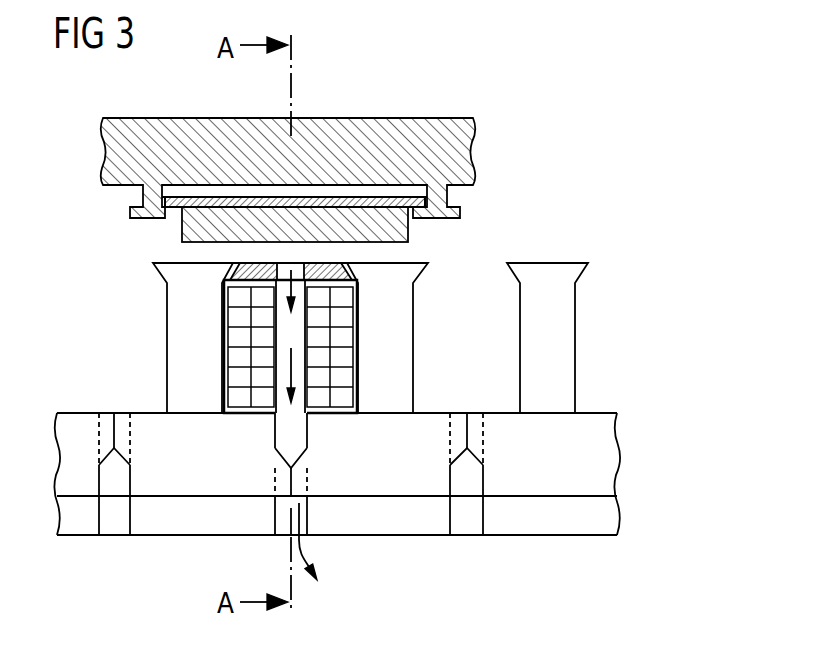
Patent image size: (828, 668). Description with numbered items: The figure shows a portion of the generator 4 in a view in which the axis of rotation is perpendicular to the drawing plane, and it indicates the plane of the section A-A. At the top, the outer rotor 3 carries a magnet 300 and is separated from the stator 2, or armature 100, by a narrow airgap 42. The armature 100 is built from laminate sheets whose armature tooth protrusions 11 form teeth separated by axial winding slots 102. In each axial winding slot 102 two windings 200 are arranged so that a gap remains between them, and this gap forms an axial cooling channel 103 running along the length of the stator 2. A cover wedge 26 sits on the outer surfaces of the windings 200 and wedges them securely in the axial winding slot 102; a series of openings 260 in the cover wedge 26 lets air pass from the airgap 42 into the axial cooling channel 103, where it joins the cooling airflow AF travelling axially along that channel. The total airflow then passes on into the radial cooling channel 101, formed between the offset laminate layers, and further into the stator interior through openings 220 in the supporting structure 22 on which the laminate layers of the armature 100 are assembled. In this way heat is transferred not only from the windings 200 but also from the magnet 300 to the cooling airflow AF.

The outer rotor 3 is at (465, 153).
The generator 4 is at (632, 174).
The magnet 300 is at (192, 223).
The airgap 42 is at (400, 253).
The cover wedge 26 is at (233, 272).
The openings 260 is at (275, 287).
The windings 200 is at (265, 405).
The axial cooling channel 103 is at (298, 333).
The radial cooling channel 101 is at (295, 432).
The armature tooth protrusion 11 is at (175, 357).
The axial winding slot 102 is at (482, 277).
The stator 2 is at (658, 393).
The armature 100 is at (658, 393).
The supporting structure 22 is at (605, 513).
The openings 220 is at (115, 525).
The cooling airflow AF is at (312, 555).